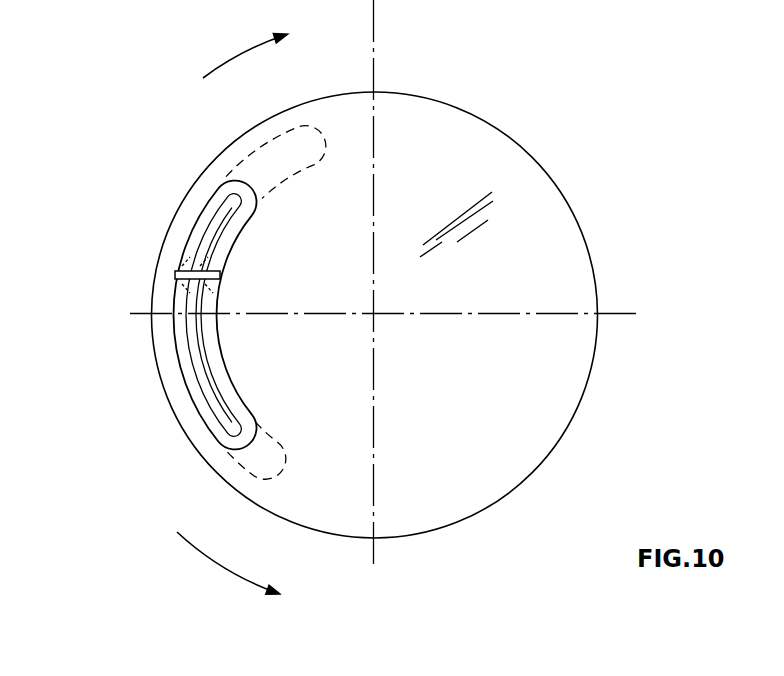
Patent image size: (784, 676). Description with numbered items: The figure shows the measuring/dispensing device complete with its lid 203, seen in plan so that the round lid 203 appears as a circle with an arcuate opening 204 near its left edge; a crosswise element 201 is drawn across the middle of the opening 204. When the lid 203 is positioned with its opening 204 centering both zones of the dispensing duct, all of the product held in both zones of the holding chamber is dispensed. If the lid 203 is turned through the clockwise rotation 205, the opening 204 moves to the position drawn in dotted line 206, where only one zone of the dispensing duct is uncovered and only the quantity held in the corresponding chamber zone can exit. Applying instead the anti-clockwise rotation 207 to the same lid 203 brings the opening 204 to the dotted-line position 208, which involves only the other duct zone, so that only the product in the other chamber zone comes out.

The cross member 201 is at (183, 275).
The lid 203 is at (472, 152).
The opening 204 is at (203, 198).
The clockwise rotation 205 is at (230, 60).
The dotted line position 206 is at (320, 127).
The anti-clockwise rotation 207 is at (218, 565).
The dotted-line position 208 is at (238, 465).